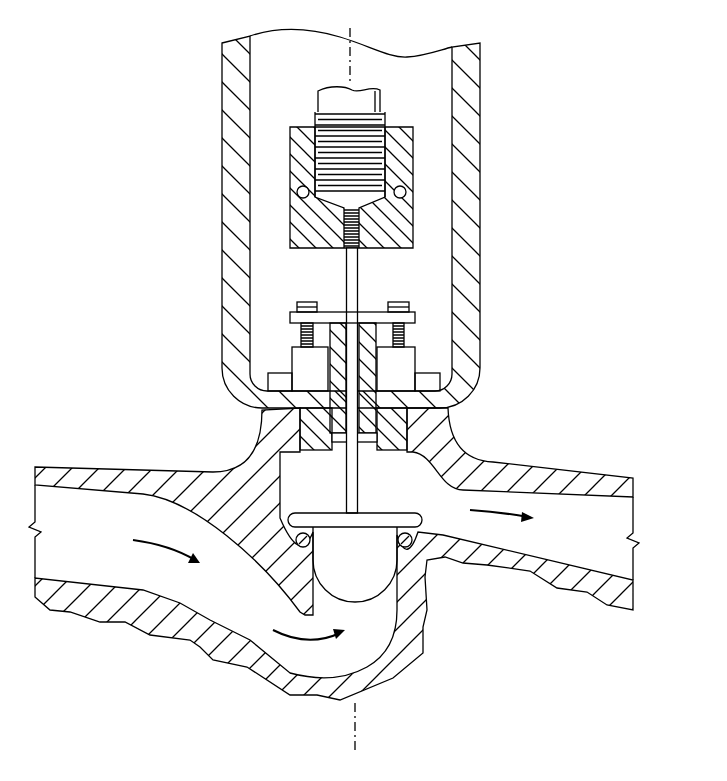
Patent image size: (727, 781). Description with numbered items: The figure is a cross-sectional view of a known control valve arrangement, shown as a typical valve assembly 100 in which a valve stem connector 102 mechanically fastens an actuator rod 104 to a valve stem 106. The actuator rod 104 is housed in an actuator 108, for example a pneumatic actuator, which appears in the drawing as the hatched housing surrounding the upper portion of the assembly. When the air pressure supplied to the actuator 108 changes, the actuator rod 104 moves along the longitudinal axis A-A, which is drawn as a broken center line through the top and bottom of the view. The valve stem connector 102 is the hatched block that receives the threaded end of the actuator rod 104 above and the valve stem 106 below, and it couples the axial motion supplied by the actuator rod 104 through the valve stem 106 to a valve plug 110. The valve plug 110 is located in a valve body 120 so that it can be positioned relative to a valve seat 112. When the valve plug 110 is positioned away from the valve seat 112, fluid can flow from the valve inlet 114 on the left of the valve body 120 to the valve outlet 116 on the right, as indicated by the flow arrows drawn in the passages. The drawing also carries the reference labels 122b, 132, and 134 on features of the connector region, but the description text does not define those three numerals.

The valve assembly 100 is at (133, 75).
The valve stem connector 102 is at (290, 138).
The actuator rod 104 is at (318, 100).
The valve stem 106 is at (362, 294).
The actuator 108 is at (482, 182).
The valve plug 110 is at (375, 570).
The valve seat 112 is at (319, 514).
The valve inlet 114 is at (105, 542).
The valve outlet 116 is at (604, 537).
The valve body 120 is at (540, 462).
The locking pins 122b is at (298, 188).
The threads 132 is at (385, 117).
The threaded bore 134 is at (343, 228).